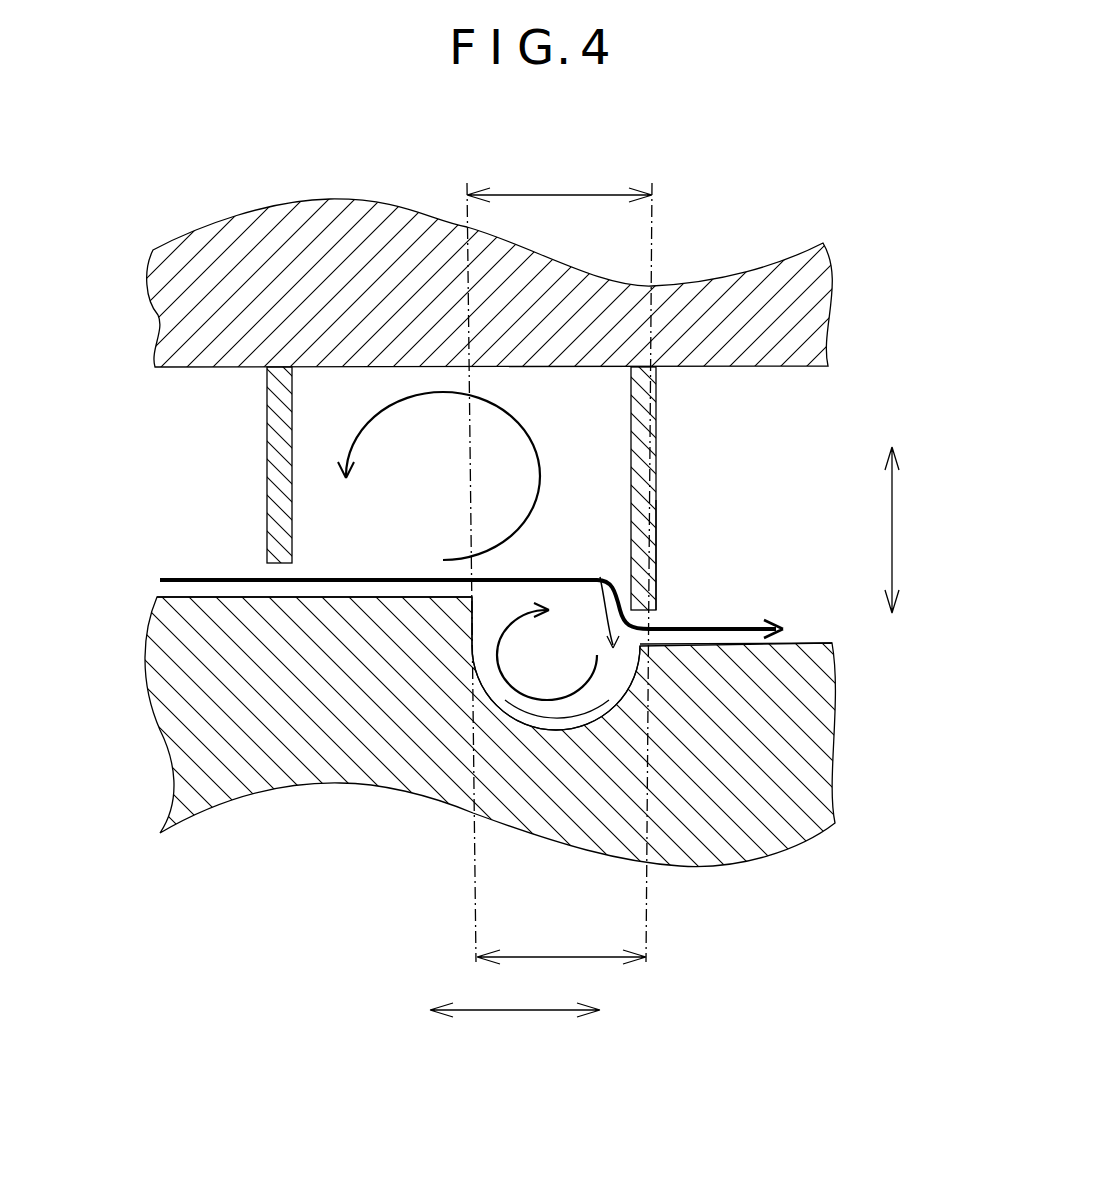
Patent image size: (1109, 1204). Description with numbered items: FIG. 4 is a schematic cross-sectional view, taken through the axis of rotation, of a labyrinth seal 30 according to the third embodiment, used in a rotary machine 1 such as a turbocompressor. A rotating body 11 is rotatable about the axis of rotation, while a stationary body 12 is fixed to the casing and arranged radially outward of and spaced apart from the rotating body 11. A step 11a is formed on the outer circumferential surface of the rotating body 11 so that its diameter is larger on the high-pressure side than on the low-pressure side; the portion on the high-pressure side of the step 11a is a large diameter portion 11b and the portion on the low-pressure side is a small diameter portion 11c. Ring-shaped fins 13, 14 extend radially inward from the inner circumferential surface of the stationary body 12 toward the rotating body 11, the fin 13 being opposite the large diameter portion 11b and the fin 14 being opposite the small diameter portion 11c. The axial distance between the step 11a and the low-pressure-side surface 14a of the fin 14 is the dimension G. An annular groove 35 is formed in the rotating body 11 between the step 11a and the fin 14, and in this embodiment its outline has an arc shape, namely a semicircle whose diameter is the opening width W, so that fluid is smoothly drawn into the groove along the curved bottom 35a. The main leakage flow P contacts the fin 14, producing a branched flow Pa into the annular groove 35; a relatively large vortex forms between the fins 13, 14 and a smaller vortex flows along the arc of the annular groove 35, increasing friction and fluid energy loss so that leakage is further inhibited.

The rotary machine 1 is at (126, 236).
The rotating body 11 is at (830, 752).
The step 11a is at (478, 628).
The large diameter portion 11b is at (383, 600).
The small diameter portion 11c is at (720, 647).
The stationary body 12 is at (818, 313).
The fin 13 is at (267, 445).
The fin 14 is at (657, 437).
The low-pressure-side surface 14a is at (657, 530).
The labyrinth seal 30 is at (770, 413).
The annular groove 35 is at (575, 645).
The curved bottom surface of groove 35a is at (560, 729).